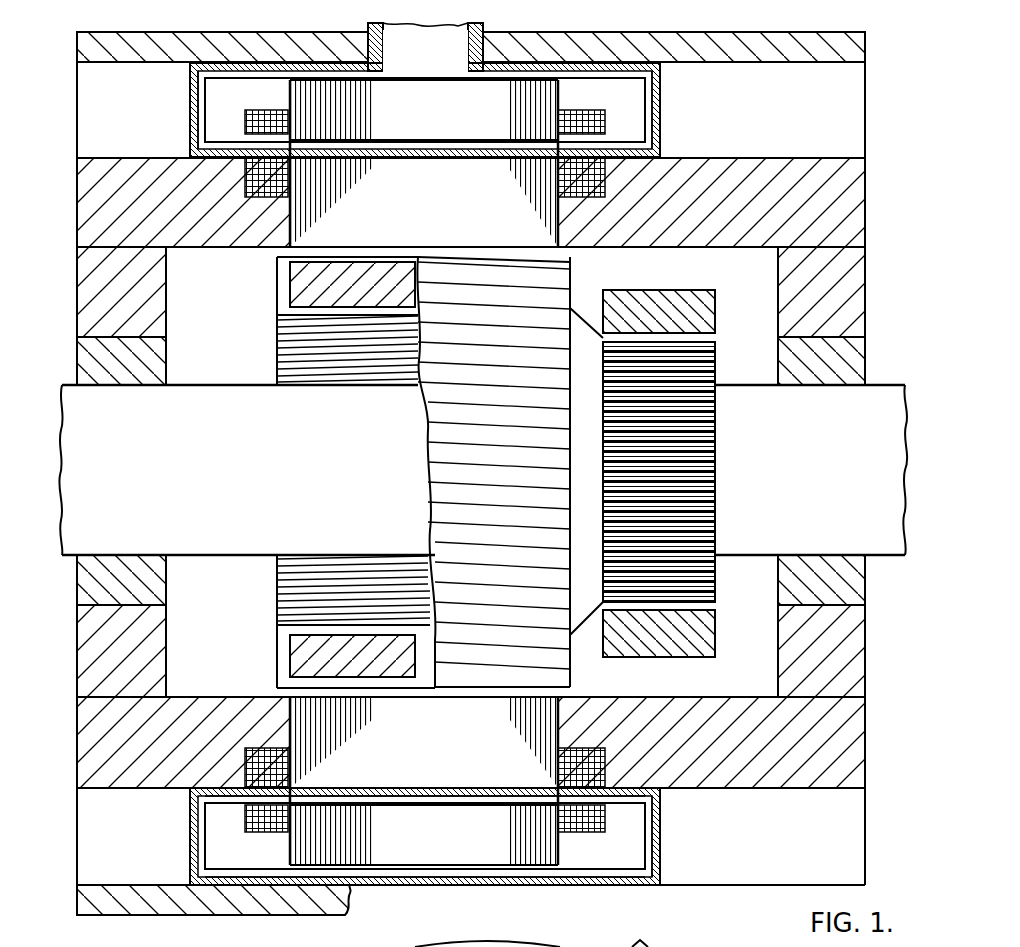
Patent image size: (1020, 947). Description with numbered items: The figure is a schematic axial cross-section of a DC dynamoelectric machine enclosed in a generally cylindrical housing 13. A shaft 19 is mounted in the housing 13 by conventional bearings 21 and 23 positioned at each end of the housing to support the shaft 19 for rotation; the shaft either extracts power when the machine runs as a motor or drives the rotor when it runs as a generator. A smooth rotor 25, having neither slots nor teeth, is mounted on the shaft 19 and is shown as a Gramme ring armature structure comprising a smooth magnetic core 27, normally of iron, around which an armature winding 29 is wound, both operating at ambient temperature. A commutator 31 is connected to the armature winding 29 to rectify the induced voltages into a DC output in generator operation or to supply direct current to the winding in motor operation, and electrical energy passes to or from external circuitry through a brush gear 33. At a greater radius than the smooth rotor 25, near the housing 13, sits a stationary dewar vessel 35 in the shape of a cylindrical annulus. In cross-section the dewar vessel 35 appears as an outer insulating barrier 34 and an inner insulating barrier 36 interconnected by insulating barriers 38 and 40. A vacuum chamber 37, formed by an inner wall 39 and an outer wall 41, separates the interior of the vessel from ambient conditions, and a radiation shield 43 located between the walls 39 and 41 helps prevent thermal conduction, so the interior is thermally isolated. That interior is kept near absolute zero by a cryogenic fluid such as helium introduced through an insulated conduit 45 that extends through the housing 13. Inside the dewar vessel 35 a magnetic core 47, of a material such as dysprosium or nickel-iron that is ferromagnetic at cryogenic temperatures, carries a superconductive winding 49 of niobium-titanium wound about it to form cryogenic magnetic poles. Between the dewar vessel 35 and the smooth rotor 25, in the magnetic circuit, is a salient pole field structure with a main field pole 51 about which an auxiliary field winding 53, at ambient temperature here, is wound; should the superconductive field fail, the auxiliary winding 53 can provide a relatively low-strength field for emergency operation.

The housing 13 is at (650, 38).
The shaft 19 is at (893, 465).
The bearing 21 is at (855, 365).
The bearing 23 is at (95, 362).
The smooth rotor 25 is at (277, 352).
The smooth magnetic core 27 is at (300, 283).
The armature winding 29 is at (285, 585).
The commutator 31 is at (705, 478).
The brush gear 33 is at (712, 297).
The outer insulating barrier 34 is at (435, 787).
The stationary dewar vessel 35 is at (662, 138).
The inner insulating barrier 36 is at (502, 886).
The vacuum chamber 37 is at (655, 100).
The insulating barrier 38 is at (195, 837).
The inner wall 39 is at (197, 125).
The insulating barrier 40 is at (662, 865).
The outer wall 41 is at (190, 75).
The radiation shield 43 is at (197, 108).
The conduit 45 is at (445, 40).
The magnetic core 47 is at (305, 98).
The superconductive winding 49 is at (262, 116).
The main field pole 51 is at (290, 212).
The auxiliary field winding 53 is at (257, 182).